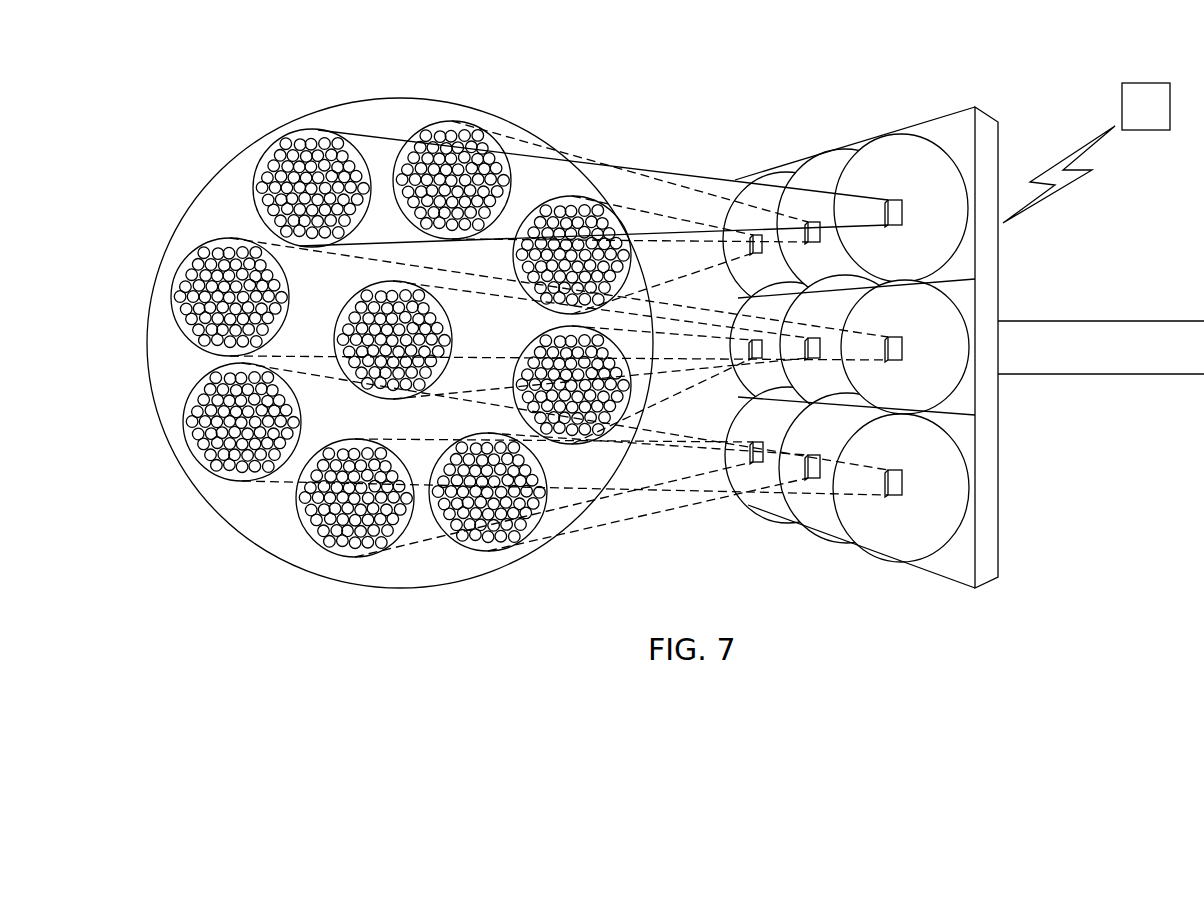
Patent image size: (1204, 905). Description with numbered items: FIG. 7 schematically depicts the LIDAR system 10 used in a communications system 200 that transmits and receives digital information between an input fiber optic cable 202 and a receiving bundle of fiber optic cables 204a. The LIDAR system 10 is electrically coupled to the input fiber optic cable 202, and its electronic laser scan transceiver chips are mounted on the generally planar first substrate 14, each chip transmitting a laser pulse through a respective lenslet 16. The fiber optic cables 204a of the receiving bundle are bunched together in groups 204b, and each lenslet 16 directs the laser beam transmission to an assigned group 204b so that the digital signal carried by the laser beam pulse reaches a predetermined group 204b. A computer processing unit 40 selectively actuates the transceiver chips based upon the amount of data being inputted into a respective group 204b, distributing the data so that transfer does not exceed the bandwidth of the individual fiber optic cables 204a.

The LIDAR system 10 is at (904, 316).
The first substrate 14 is at (984, 107).
The lenslet 16 is at (890, 135).
The computer processing unit 40 is at (1149, 83).
The communications system 200 is at (721, 72).
The input fiber optic cable 202 is at (592, 139).
The fiber optic cable 204a is at (306, 141).
The group 204b is at (341, 127).